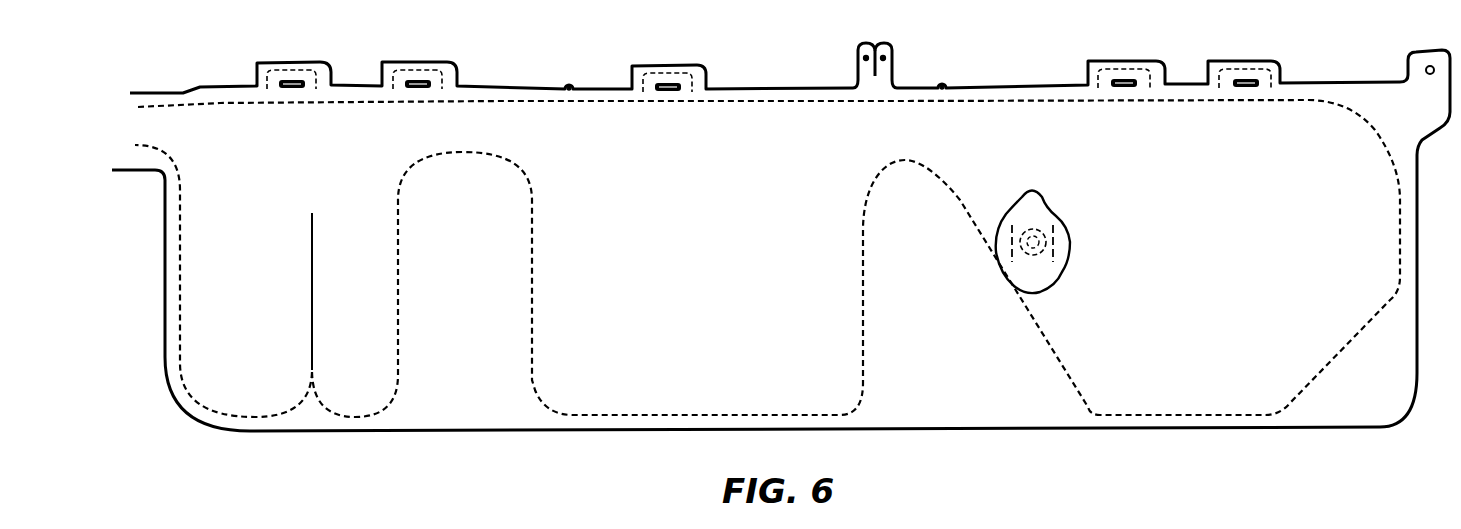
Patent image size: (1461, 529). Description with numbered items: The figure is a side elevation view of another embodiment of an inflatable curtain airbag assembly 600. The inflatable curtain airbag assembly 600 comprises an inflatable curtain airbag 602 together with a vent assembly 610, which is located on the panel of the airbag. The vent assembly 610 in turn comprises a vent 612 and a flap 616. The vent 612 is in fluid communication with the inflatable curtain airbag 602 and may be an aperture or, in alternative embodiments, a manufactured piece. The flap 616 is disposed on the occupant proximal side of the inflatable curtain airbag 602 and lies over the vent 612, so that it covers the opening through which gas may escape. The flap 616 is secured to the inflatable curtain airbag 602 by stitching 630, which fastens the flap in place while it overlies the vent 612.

The inflatable curtain airbag assembly 600 is at (760, 60).
The inflatable curtain airbag 602 is at (940, 123).
The vent assembly 610 is at (1027, 178).
The flap 616 is at (1037, 202).
The stitching 630 is at (997, 252).
The vent 612 is at (1013, 278).